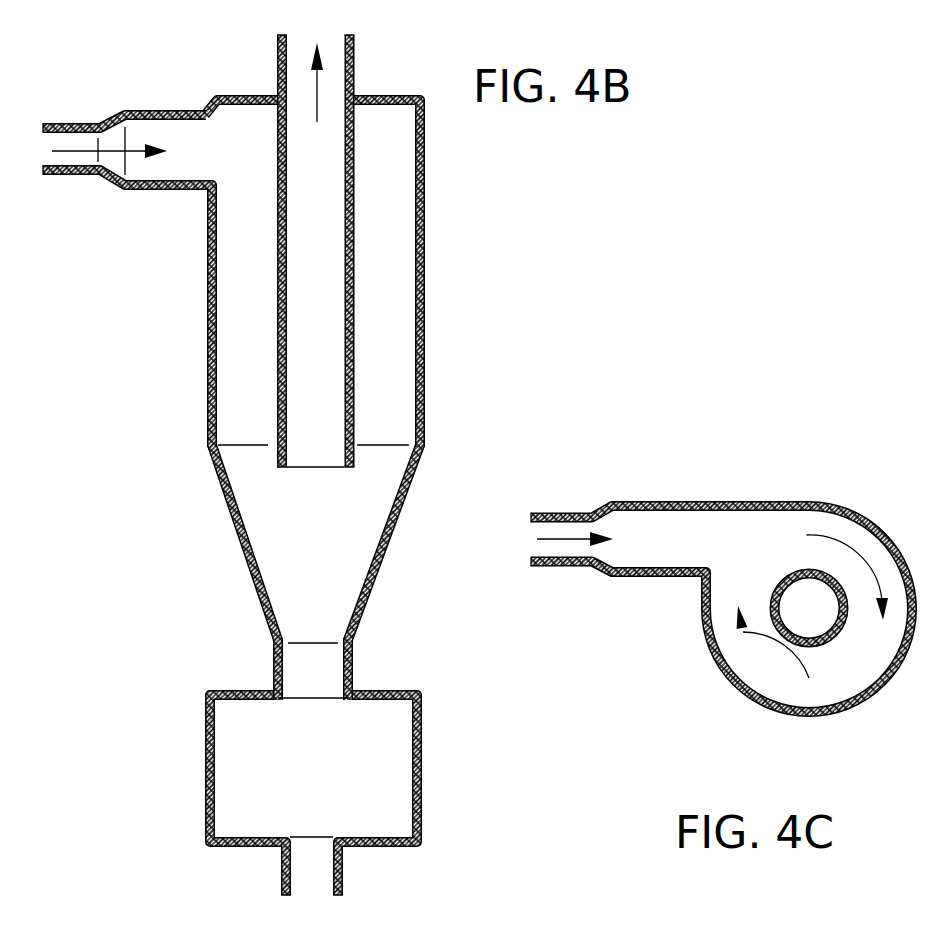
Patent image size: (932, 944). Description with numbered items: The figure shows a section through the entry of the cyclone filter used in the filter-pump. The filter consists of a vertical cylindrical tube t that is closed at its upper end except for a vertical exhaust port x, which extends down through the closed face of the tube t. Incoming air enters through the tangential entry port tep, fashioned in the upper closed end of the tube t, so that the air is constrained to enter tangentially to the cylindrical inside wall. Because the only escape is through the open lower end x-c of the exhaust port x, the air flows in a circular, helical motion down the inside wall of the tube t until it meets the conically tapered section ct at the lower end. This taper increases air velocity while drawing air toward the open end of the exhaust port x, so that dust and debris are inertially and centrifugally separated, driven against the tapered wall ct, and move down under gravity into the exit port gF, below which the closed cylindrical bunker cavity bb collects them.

In FIG. 4B, the vertical cylindrical tube t is at (200, 368).
In FIG. 4C, the vertical cylindrical tube t is at (722, 696).
In FIG. 4B, the tangential entry port tep is at (72, 177).
In FIG. 4C, the tangential entry port tep is at (568, 512).
In FIG. 4B, the vertical exhaust port x is at (278, 70).
In FIG. 4C, the vertical exhaust port x is at (822, 642).
In FIG. 4B, the vortex finder lower end x-c is at (312, 468).
In FIG. 4B, the conically tapered section ct is at (252, 578).
In FIG. 4B, the exit port gF is at (312, 661).
In FIG. 4B, the bunker cavity bb is at (220, 757).